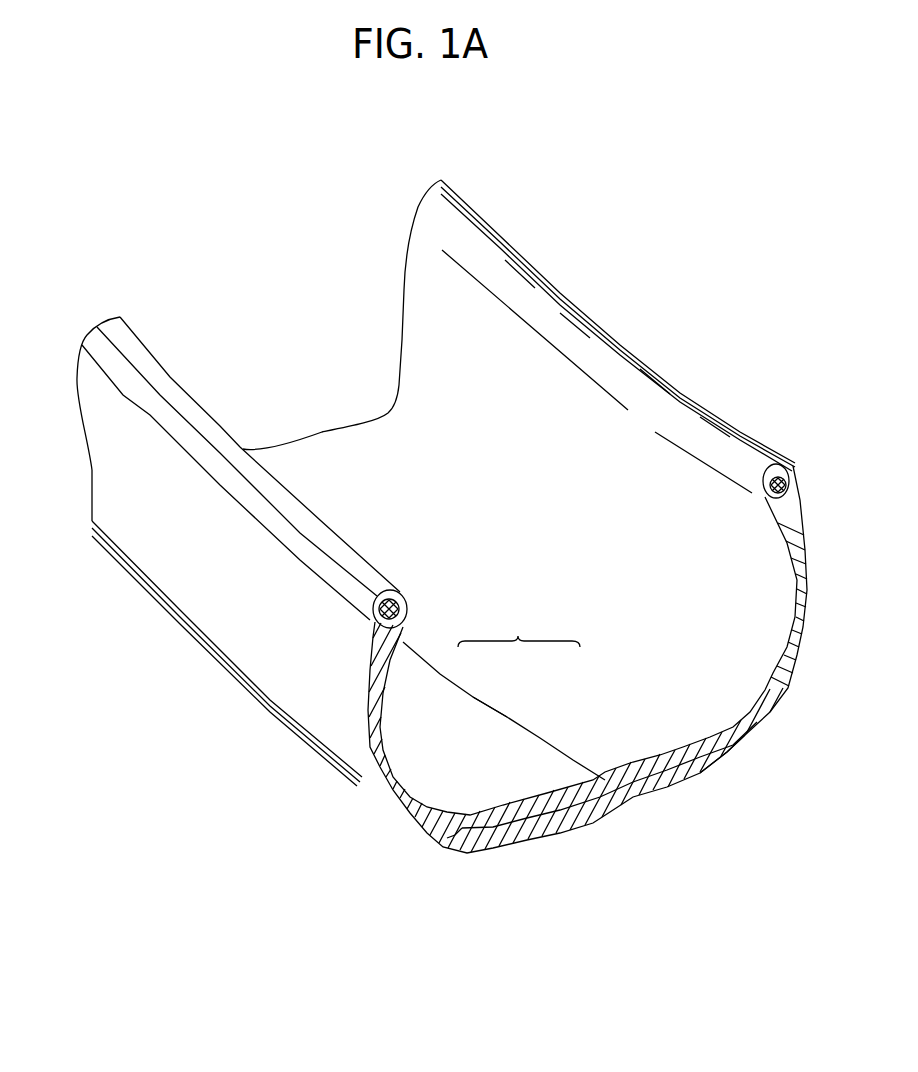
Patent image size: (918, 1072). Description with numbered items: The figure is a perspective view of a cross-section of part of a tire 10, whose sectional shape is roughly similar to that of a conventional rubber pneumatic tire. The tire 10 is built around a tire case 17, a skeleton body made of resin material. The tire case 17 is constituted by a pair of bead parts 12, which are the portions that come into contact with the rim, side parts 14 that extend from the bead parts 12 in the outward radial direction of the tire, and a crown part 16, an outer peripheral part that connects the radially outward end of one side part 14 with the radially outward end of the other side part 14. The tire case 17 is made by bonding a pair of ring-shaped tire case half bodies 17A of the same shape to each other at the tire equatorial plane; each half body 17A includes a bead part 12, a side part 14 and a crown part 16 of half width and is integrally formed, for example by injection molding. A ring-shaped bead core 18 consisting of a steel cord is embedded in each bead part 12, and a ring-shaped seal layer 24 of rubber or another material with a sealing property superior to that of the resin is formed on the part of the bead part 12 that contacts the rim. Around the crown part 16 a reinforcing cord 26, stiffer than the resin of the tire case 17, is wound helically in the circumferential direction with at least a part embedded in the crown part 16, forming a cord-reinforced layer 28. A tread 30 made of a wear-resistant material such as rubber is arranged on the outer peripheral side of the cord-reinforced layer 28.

The tire 10 is at (659, 296).
The bead part 12 is at (765, 450).
The side part 14 is at (812, 596).
The crown part 16 is at (683, 790).
The tire case 17 is at (519, 630).
The tire case half body 17A is at (474, 712).
The bead core 18 is at (765, 503).
The seal layer 24 is at (798, 462).
The reinforcing cord 26 is at (529, 833).
The cord-reinforced layer 28 is at (573, 827).
The tread 30 is at (729, 770).